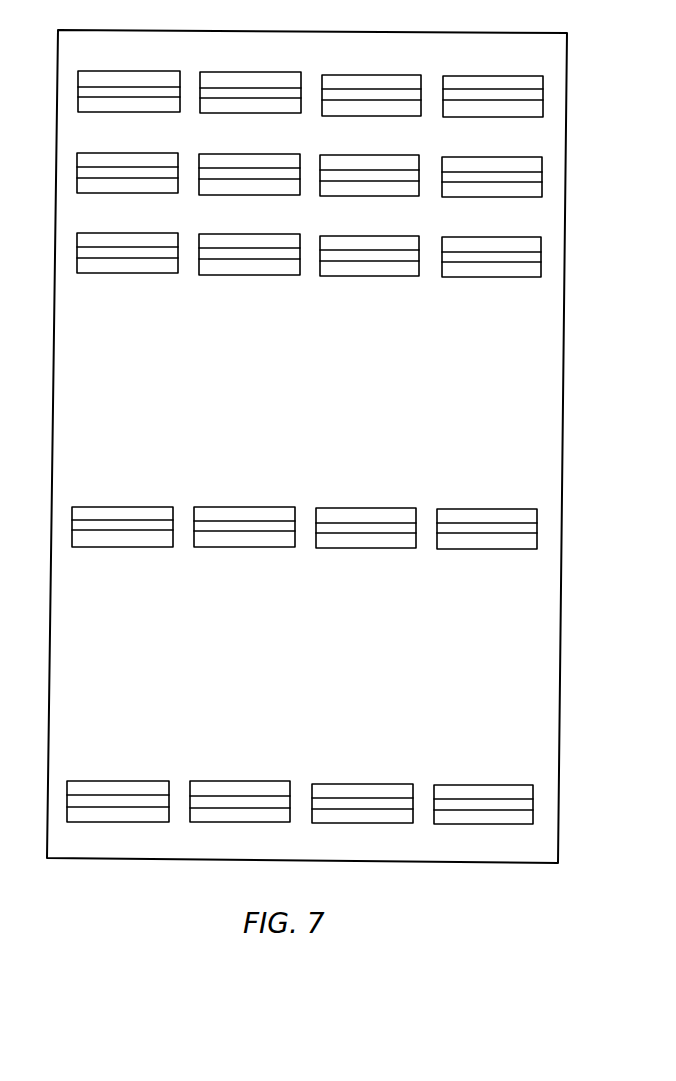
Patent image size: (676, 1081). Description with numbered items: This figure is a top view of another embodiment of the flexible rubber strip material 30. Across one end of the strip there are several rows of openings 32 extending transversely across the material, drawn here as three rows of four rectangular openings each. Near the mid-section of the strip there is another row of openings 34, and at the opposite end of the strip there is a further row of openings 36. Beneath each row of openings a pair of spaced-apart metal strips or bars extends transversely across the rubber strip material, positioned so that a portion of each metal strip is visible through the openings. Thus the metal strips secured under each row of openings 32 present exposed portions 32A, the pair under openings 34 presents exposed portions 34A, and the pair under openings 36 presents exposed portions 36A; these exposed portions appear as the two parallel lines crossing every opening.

The rubber strip material 30 is at (313, 29).
The openings 32 is at (550, 95).
The exposed portions 32A is at (402, 79).
The openings 34 is at (544, 529).
The exposed portions 34A is at (260, 543).
The openings 36 is at (540, 804).
The exposed portions 36A is at (260, 818).